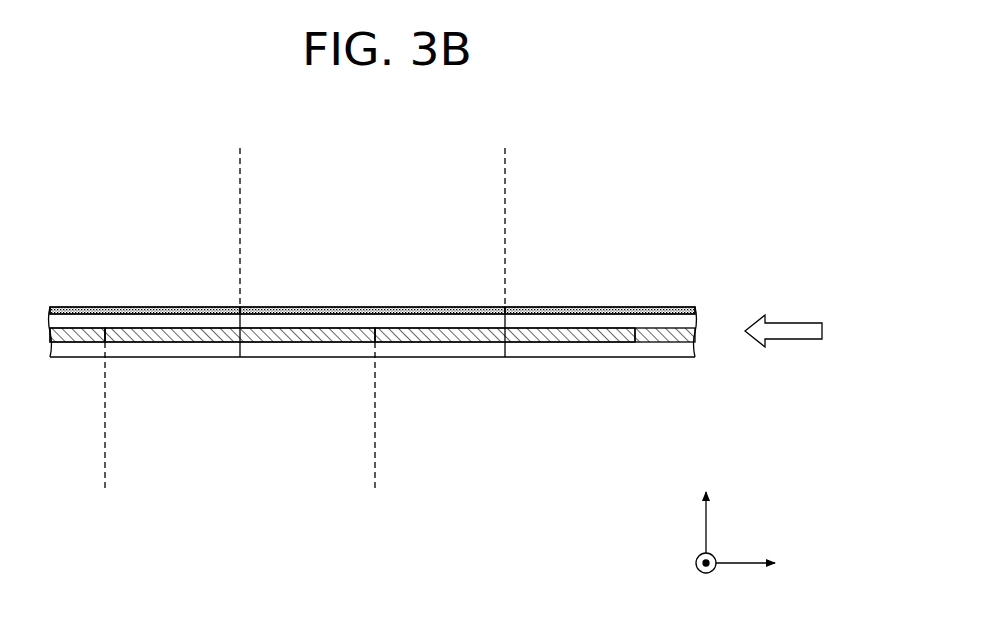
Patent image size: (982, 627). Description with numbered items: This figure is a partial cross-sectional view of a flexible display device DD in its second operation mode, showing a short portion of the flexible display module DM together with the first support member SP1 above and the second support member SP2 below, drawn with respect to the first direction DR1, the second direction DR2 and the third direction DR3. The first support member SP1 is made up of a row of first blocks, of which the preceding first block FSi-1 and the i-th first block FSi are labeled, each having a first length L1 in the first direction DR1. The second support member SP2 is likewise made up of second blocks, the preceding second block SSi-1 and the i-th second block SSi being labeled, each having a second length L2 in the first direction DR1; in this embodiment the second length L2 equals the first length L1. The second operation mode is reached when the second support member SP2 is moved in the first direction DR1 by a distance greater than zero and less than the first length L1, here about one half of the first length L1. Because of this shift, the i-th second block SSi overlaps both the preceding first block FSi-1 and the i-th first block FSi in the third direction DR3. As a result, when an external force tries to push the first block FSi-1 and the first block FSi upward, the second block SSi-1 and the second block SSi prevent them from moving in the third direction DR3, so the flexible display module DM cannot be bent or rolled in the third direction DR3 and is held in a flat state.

The flexible display module DM is at (690, 306).
The flexible display device DD is at (737, 180).
The (i−1)-th first block FSi-1 is at (133, 318).
The i-th first block FSi is at (368, 318).
The (i−1)-th second block SSi-1 is at (70, 342).
The i-th second block SSi is at (300, 342).
The first support member SP1 is at (117, 240).
The second support member SP2 is at (57, 417).
The first length L1 is at (504, 163).
The second length L2 is at (106, 475).
The first direction DR1 is at (767, 562).
The second direction DR2 is at (711, 576).
The third direction DR3 is at (711, 510).